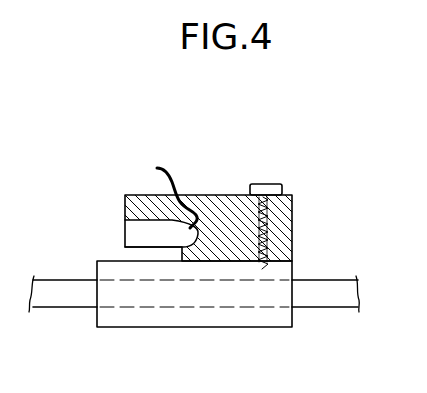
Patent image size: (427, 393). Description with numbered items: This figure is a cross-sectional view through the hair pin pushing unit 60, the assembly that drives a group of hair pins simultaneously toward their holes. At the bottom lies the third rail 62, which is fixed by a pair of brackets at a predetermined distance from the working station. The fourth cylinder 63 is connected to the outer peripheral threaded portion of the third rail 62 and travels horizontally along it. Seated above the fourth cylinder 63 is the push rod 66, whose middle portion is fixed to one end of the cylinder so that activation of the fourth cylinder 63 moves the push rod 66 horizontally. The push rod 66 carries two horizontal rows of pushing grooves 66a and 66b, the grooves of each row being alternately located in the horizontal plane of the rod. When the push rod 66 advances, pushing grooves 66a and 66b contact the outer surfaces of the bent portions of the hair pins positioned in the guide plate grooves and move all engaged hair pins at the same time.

The hair pin pushing unit 60 is at (296, 210).
The third rail 62 is at (325, 300).
The fourth cylinder 63 is at (190, 322).
The push rod 66 is at (223, 193).
The pushing groove 66a is at (177, 233).
The pushing groove 66b is at (164, 180).